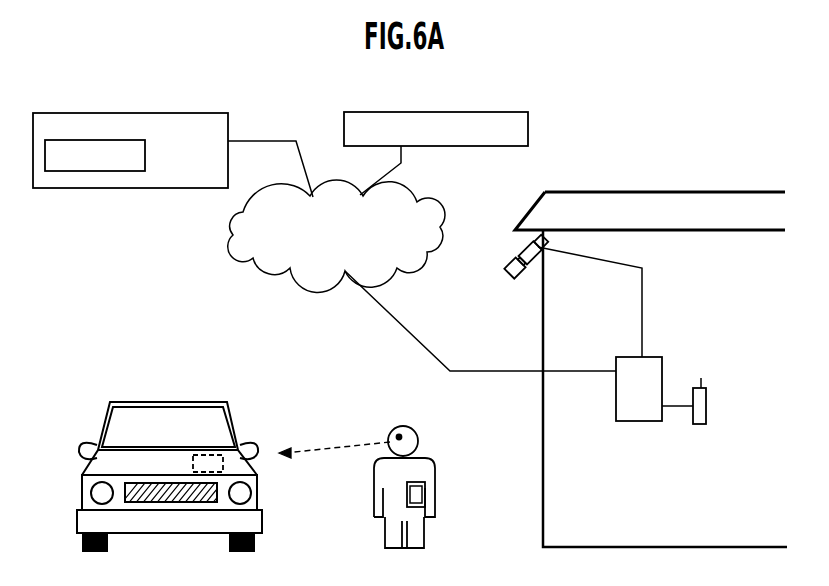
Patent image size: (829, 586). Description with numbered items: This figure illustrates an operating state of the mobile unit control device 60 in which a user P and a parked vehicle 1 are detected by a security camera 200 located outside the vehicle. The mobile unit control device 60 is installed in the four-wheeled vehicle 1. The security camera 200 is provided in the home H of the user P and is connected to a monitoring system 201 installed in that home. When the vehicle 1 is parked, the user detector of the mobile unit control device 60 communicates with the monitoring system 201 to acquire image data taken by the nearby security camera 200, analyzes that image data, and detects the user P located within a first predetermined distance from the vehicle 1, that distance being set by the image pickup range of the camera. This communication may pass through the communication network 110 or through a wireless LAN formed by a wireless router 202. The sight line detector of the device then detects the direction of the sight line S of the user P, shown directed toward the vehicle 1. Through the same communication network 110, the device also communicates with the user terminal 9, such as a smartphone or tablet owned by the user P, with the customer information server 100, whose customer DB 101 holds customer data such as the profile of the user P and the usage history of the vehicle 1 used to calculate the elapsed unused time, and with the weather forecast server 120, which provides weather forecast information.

The customer information server 100 is at (140, 112).
The customer DB 101 is at (146, 160).
The weather forecast server 120 is at (463, 112).
The communication network 110 is at (237, 249).
The home H is at (660, 190).
The security camera 200 is at (505, 263).
The monitoring system 201 is at (655, 355).
The wireless router 202 is at (708, 398).
The vehicle 1 is at (132, 398).
The mobile unit control device 60 is at (210, 456).
The sight line S is at (340, 445).
The user P is at (437, 472).
The user terminal 9 is at (422, 500).